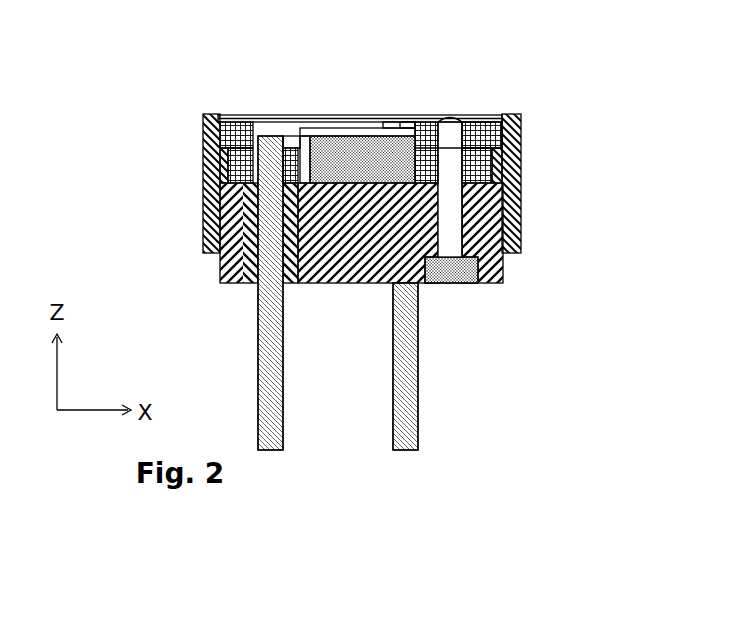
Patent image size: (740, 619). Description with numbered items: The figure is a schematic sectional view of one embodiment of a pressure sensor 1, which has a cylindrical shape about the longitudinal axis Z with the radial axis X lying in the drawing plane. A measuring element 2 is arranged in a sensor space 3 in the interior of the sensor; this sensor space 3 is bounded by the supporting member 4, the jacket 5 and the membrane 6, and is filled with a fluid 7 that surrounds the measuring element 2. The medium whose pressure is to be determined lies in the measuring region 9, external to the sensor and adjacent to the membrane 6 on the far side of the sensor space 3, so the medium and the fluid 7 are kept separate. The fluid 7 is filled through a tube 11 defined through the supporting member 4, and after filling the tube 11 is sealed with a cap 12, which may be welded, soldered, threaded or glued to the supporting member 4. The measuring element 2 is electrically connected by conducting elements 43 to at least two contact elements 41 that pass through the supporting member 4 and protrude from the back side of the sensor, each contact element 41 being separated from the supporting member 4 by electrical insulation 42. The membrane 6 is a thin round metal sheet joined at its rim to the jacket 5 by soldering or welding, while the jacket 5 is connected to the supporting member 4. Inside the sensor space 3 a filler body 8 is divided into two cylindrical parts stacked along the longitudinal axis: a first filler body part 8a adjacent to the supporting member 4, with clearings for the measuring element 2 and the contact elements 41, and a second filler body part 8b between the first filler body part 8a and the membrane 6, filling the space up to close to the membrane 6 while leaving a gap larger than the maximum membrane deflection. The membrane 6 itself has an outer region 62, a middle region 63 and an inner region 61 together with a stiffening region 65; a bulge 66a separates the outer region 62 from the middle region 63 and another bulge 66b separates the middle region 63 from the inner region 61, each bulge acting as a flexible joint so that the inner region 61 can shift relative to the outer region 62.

The pressure sensor 1 is at (104, 128).
The measuring element 2 is at (332, 136).
The sensor space 3 is at (445, 93).
The supporting member 4 is at (410, 235).
The jacket 5 is at (208, 168).
The membrane 6 is at (308, 104).
The fluid 7 is at (435, 120).
The filler body 8 is at (605, 103).
The first filler body part 8a is at (485, 170).
The second filler body part 8b is at (485, 132).
The measuring region 9 is at (242, 32).
The tube 11 is at (458, 228).
The cap 12 is at (466, 275).
The contact element 41 is at (268, 377).
The electrical insulation 42 is at (240, 245).
The conducting element 43 is at (287, 128).
The inner region 61 is at (411, 122).
The outer region 62 is at (500, 116).
The middle region 63 is at (465, 120).
The stiffening region 65 is at (358, 122).
The bulge 66a is at (488, 121).
The bulge 66b is at (446, 120).